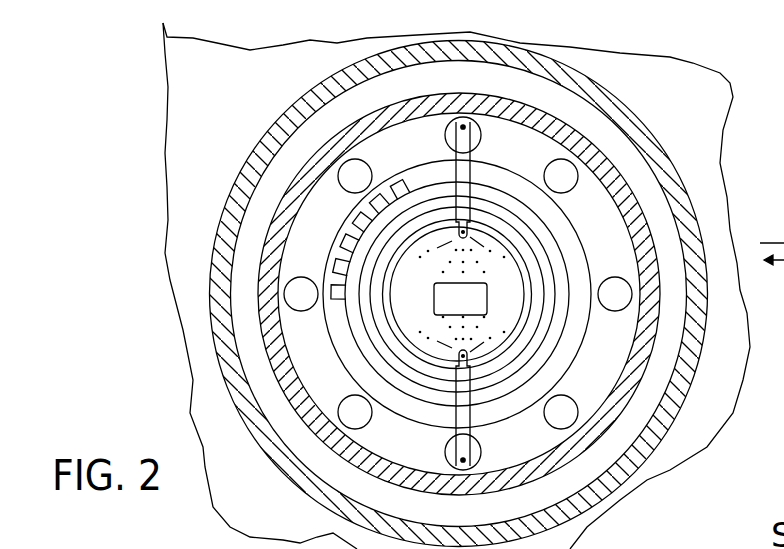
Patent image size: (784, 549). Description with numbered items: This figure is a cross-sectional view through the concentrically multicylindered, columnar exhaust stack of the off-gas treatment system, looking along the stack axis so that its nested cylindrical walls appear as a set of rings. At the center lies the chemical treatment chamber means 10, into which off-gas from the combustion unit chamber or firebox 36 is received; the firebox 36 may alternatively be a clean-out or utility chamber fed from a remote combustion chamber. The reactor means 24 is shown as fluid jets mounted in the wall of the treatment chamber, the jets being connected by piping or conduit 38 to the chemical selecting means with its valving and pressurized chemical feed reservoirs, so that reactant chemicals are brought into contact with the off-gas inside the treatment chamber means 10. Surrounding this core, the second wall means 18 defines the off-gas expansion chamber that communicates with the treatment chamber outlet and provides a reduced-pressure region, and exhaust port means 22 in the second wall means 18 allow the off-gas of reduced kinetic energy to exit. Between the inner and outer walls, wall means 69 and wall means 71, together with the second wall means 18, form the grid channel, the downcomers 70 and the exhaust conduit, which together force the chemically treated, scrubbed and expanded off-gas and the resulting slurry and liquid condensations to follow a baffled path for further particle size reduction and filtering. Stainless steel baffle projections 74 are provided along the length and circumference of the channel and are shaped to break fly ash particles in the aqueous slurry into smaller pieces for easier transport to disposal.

The chemical treatment chamber means 10 is at (392, 328).
The second wall means 18 is at (592, 138).
The exhaust port means 22 is at (289, 282).
The reactor means 24 is at (464, 233).
The firebox 36 is at (716, 108).
The piping or conduit 38 is at (465, 398).
The wall means 69 is at (548, 290).
The downcomers 70 is at (608, 234).
The wall means 71 is at (560, 243).
The baffle projections 74 is at (400, 186).